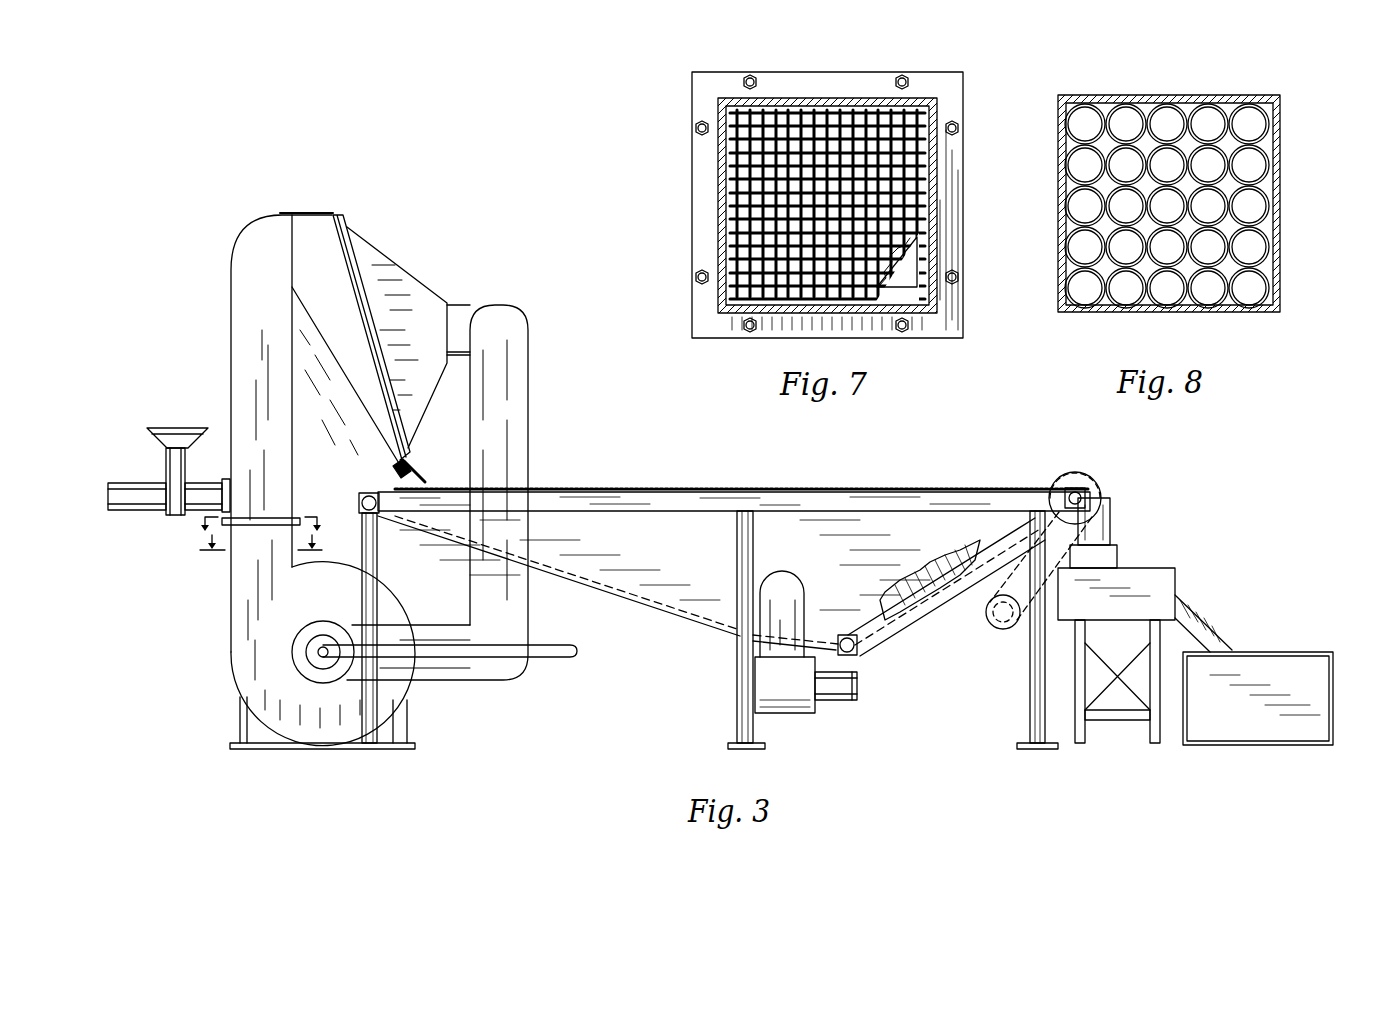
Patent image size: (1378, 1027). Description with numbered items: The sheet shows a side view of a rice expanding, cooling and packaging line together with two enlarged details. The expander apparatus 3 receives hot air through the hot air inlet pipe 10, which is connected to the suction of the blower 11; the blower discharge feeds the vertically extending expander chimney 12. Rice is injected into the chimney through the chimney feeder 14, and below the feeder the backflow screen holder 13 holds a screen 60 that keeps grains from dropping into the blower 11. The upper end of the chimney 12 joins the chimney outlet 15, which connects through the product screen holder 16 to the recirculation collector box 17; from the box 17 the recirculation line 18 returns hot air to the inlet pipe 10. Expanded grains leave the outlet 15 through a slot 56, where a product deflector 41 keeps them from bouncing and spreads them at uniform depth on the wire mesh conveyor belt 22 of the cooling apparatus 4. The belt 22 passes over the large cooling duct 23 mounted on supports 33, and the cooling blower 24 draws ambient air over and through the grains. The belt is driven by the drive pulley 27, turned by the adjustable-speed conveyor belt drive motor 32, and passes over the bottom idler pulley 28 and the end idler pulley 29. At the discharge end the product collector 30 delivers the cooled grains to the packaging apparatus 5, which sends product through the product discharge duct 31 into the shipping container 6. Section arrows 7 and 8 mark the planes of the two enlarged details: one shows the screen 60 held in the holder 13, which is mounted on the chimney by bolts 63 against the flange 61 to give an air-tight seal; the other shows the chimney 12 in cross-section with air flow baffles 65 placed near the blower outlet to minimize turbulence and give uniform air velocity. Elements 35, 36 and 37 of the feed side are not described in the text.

In FIG. 3, the expander apparatus 3 is at (255, 214).
In FIG. 3, the cooling apparatus 4 is at (870, 476).
In FIG. 3, the packaging apparatus 5 is at (1181, 565).
In FIG. 3, the shipping container 6 is at (1337, 646).
In FIG. 3, the section line 7 is at (261, 525).
In FIG. 3, the section line 8 is at (263, 540).
In FIG. 3, the hot air inlet pipe 10 is at (314, 622).
In FIG. 3, the blower 11 is at (231, 660).
In FIG. 7, the expander chimney 12 is at (938, 200).
In FIG. 8, the expander chimney 12 is at (1283, 155).
In FIG. 3, the backflow screen holder 13 is at (280, 518).
In FIG. 7, the backflow screen holder 13 is at (965, 72).
In FIG. 3, the chimney feeder 14 is at (204, 483).
In FIG. 3, the chimney outlet 15 is at (301, 213).
In FIG. 3, the product screen holder 16 is at (338, 213).
In FIG. 3, the recirculation collector box 17 is at (414, 283).
In FIG. 3, the recirculation line 18 is at (530, 366).
In FIG. 3, the wire mesh conveyor belt 22 is at (675, 610).
In FIG. 3, the cooling duct 23 is at (610, 573).
In FIG. 3, the cooling blower 24 is at (815, 708).
In FIG. 3, the drive pulley 27 is at (1088, 475).
In FIG. 3, the bottom idler pulley 28 is at (857, 650).
In FIG. 3, the end idler pulley 29 is at (360, 494).
In FIG. 3, the product collector 30 is at (1112, 510).
In FIG. 3, the packaging apparatus product discharge duct 31 is at (1207, 627).
In FIG. 3, the conveyor belt drive motor 32 is at (998, 626).
In FIG. 3, the supports 33 is at (385, 735).
In FIG. 3, the funnel 35 is at (181, 428).
In FIG. 3, the valve 36 is at (166, 468).
In FIG. 3, the feed pipe 37 is at (134, 510).
In FIG. 3, the product deflector 41 is at (412, 472).
In FIG. 3, the slot 56 is at (393, 468).
In FIG. 7, the screen 60 is at (925, 237).
In FIG. 7, the flange 61 is at (695, 185).
In FIG. 7, the bolts 63 is at (962, 128).
In FIG. 8, the air flow baffles 65 is at (1280, 255).